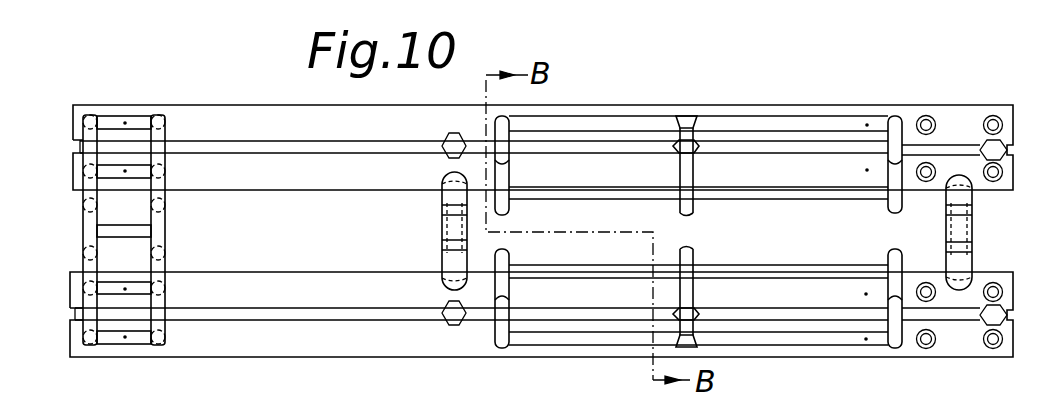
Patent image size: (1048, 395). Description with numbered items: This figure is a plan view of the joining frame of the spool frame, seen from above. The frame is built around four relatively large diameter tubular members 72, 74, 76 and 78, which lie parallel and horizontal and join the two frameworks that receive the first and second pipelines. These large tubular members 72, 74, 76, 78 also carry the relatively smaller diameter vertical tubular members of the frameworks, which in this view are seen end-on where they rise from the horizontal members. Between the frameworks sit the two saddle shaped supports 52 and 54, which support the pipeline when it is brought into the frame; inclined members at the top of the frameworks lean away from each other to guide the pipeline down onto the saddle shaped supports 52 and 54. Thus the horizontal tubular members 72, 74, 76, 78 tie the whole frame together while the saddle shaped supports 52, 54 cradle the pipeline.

The tubular member 72 is at (203, 112).
The tubular member 74 is at (246, 172).
The tubular member 76 is at (246, 240).
The tubular member 78 is at (252, 343).
The saddle shaped support 52 is at (445, 238).
The saddle shaped support 54 is at (955, 225).